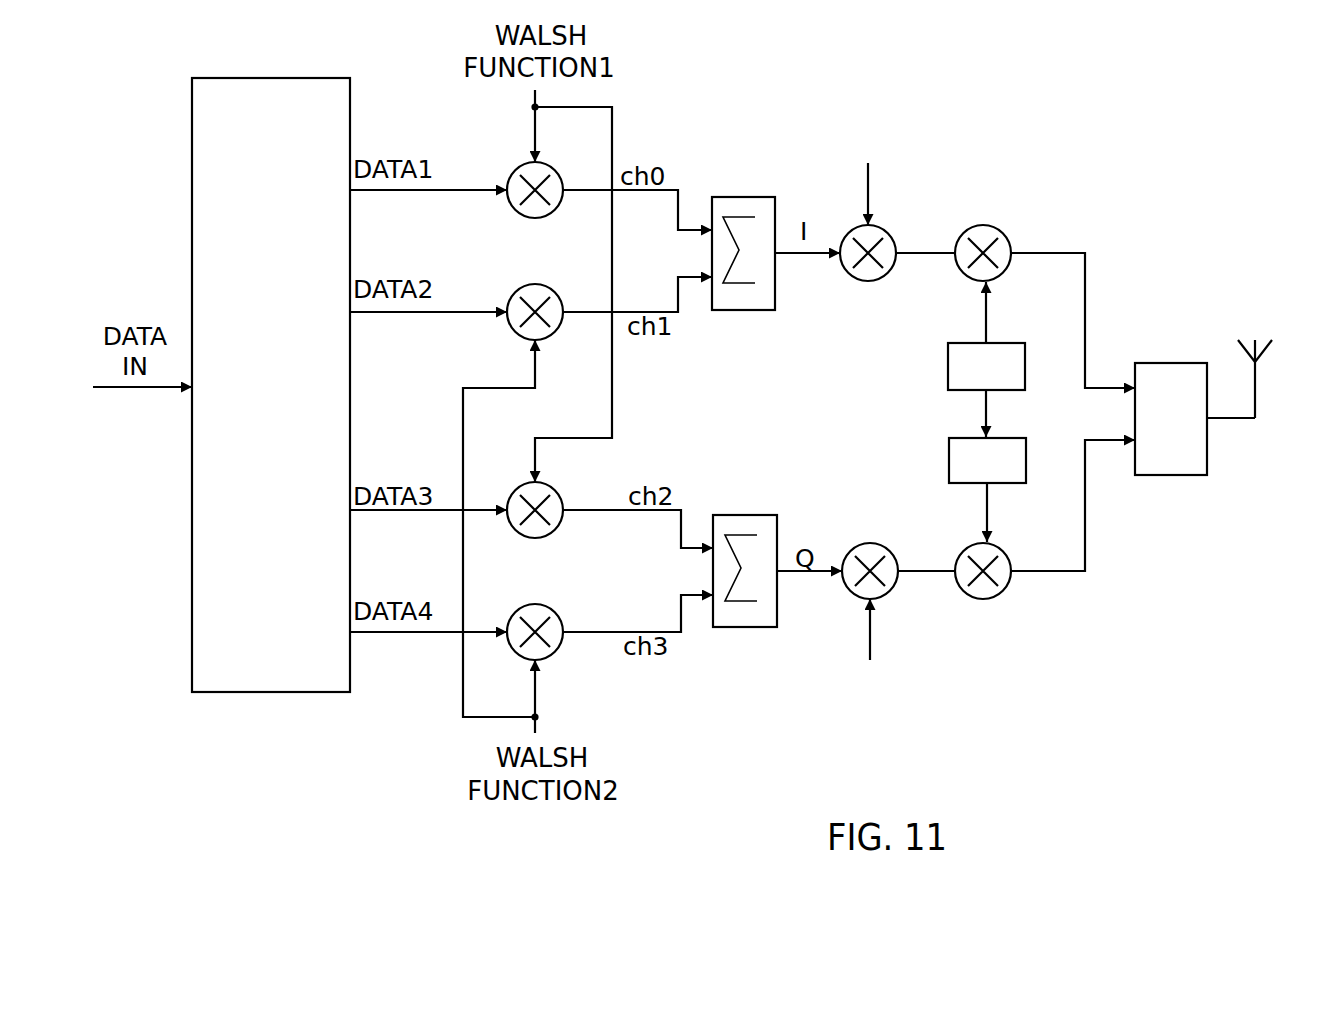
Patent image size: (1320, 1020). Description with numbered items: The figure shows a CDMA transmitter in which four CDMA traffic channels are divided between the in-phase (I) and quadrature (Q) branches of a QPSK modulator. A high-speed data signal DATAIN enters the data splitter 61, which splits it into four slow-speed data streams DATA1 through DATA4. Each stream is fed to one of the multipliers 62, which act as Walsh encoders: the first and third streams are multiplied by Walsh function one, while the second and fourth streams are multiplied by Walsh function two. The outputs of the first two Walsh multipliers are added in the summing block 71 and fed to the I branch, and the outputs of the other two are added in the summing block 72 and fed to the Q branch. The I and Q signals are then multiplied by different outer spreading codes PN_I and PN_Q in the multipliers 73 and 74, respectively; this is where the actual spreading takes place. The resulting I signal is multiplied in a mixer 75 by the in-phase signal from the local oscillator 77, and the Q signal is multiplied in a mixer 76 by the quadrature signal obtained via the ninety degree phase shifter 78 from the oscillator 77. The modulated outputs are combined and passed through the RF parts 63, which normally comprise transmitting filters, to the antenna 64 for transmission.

The data splitter 61 is at (263, 78).
The multipliers (Walsh encoders) 62 is at (574, 669).
The summing block 71 is at (740, 197).
The summing block 72 is at (745, 515).
The multiplier 73 is at (876, 281).
The multiplier 74 is at (880, 544).
The I-channel mixer 75 is at (995, 228).
The Q-channel mixer 76 is at (985, 599).
The local oscillator 77 is at (948, 372).
The 90 degree phase shifter 78 is at (949, 455).
The RF parts 63 is at (1165, 363).
The antenna 64 is at (1256, 411).